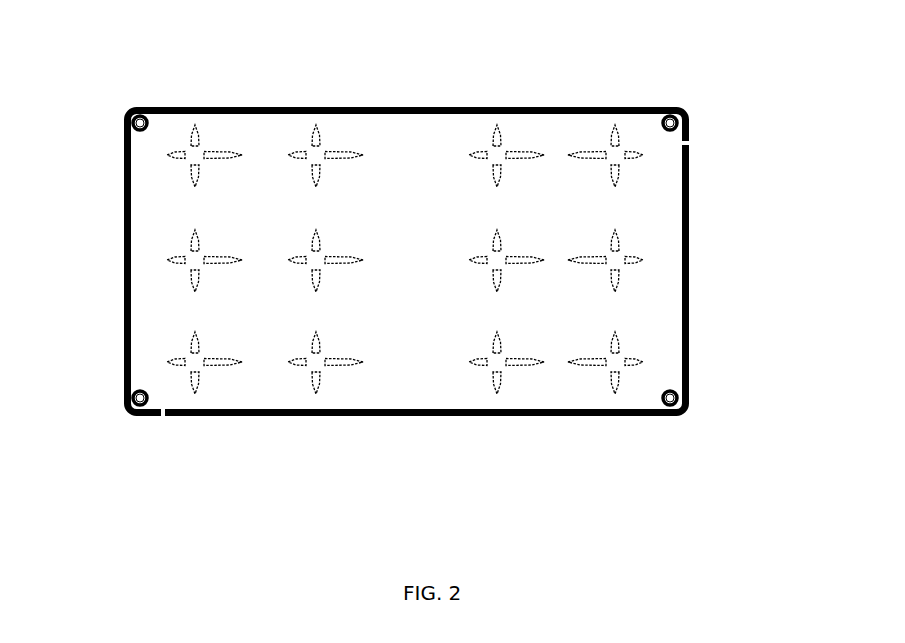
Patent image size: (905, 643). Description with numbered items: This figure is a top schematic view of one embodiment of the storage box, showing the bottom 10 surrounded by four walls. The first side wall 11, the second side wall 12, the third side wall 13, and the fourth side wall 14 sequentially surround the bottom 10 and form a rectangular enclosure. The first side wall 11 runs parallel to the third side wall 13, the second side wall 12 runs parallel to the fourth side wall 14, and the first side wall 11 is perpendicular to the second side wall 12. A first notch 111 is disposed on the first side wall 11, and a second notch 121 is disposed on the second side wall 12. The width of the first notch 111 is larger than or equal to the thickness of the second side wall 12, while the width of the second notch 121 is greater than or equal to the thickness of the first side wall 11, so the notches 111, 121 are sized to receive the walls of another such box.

The housing plate 10 is at (443, 152).
The first side wall 11 is at (272, 417).
The first notch 111 is at (157, 416).
The second side wall 12 is at (687, 273).
The second notch 121 is at (692, 140).
The third side wall 13 is at (237, 105).
The fourth side wall 14 is at (123, 245).